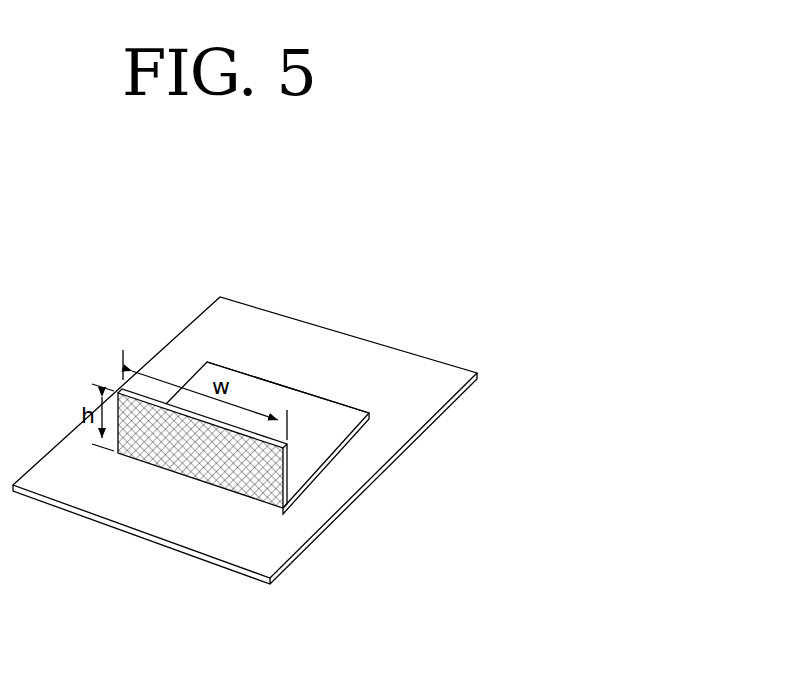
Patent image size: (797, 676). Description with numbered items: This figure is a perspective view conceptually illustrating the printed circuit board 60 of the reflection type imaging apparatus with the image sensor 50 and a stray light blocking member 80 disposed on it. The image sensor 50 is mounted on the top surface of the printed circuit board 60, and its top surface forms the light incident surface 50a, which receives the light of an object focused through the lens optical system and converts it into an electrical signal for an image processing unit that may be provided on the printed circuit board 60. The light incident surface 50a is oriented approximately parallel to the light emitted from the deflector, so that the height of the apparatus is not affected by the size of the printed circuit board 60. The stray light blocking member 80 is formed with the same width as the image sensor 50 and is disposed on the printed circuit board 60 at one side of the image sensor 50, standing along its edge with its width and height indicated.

The image sensor 50 is at (362, 400).
The light incident surface 50a is at (302, 403).
The printed circuit board 60 is at (388, 488).
The stray light blocking member 80 is at (242, 482).